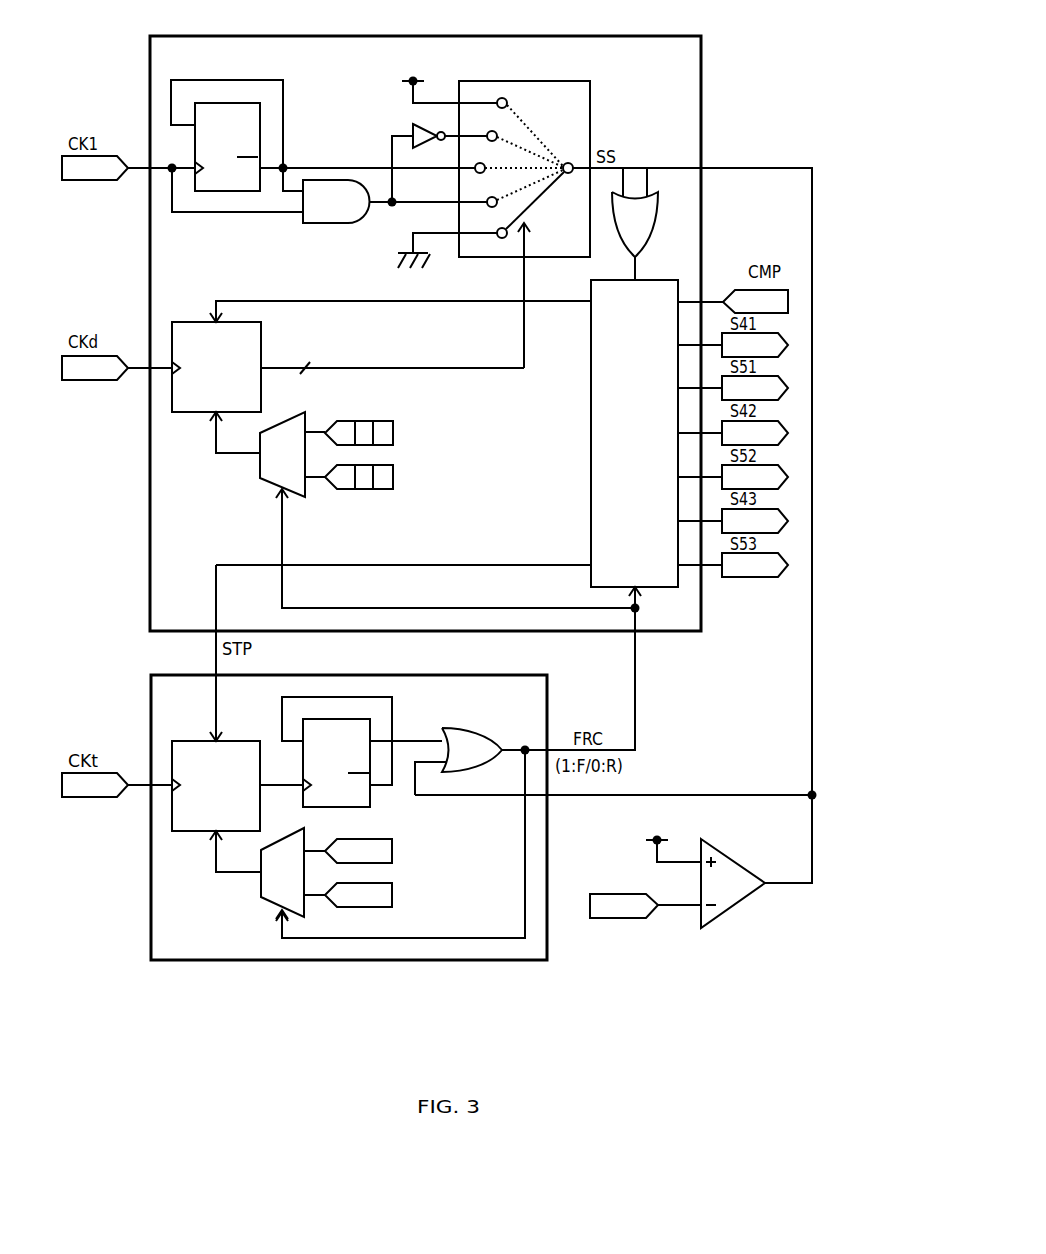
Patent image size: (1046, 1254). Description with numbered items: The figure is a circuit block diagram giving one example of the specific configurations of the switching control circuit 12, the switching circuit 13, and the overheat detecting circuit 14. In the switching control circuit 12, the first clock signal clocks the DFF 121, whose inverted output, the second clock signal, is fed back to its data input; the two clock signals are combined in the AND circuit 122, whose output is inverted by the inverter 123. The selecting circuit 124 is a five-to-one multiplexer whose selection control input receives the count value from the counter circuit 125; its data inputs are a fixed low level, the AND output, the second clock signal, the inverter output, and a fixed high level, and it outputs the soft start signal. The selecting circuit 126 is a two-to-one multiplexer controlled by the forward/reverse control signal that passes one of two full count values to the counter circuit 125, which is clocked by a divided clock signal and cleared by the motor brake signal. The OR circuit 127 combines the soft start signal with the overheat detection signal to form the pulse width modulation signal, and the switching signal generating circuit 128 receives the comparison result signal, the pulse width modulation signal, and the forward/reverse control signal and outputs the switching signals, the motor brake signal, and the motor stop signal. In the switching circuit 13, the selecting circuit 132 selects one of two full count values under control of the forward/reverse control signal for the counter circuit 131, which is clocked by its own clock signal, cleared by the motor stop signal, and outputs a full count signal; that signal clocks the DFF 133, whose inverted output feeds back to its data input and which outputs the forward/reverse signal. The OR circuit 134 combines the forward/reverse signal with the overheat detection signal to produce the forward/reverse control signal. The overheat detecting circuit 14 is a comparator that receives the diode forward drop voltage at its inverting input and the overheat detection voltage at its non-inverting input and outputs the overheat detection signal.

The switching control circuit 12 is at (701, 66).
The switching circuit 13 is at (547, 705).
The overheat detecting circuit 14 is at (703, 840).
The DFF 121 is at (228, 103).
The AND circuit 122 is at (305, 225).
The inverter 123 is at (413, 126).
The selecting circuit 124 is at (523, 81).
The counter circuit 125 is at (238, 322).
The selecting circuit 126 is at (303, 412).
The OR circuit 127 is at (655, 194).
The switching signal generating circuit 128 is at (591, 440).
The counter circuit 131 is at (238, 741).
The selecting circuit 132 is at (302, 828).
The DFF 133 is at (338, 719).
The OR circuit 134 is at (440, 770).